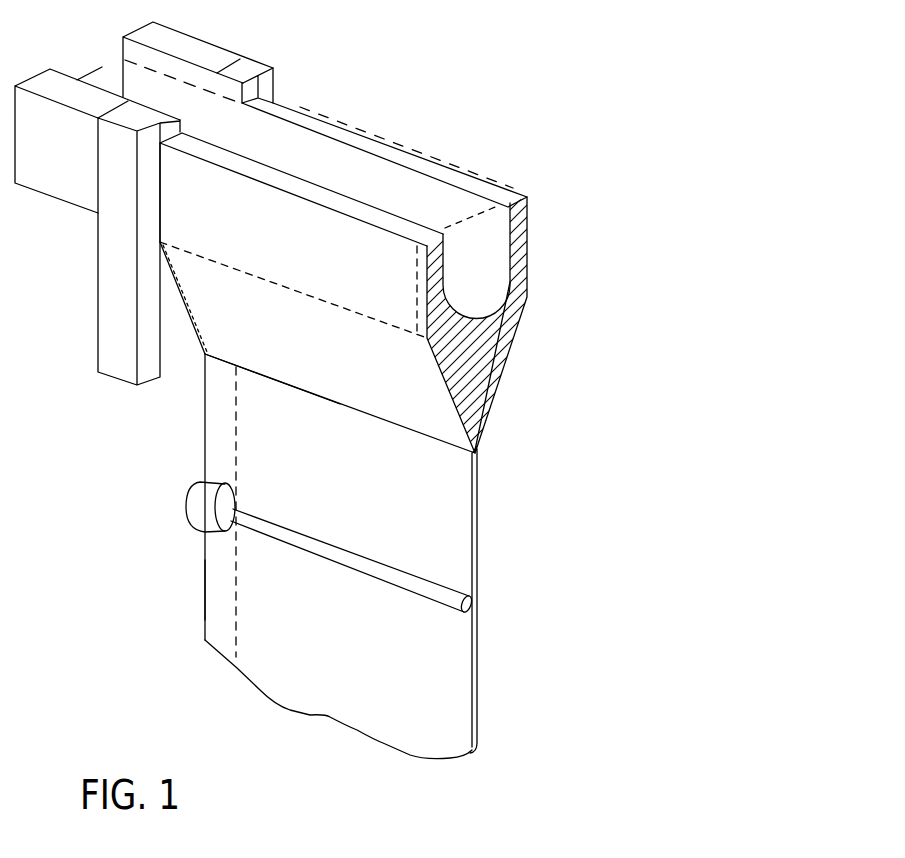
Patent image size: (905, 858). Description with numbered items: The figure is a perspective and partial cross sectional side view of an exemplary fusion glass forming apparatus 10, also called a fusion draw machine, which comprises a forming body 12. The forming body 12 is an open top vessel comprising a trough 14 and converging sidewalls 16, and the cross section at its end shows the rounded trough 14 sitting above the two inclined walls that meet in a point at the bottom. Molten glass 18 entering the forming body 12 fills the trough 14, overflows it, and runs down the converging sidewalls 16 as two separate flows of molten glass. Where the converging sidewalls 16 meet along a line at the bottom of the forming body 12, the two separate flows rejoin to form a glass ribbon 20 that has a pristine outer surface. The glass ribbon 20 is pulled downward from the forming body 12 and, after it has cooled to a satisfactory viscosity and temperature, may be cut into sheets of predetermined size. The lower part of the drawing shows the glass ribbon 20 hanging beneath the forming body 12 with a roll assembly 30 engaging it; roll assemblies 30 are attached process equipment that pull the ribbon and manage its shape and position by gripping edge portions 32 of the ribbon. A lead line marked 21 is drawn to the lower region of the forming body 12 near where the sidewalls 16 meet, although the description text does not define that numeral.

The fusion glass forming apparatus 10 is at (557, 155).
The forming body 12 is at (512, 355).
The trough 14 is at (487, 278).
The converging sidewalls 16 is at (352, 371).
The molten glass 18 is at (100, 66).
The glass ribbon 20 is at (486, 538).
The lower edge 21 is at (325, 400).
The roll assembly 30 is at (170, 490).
The edge portions 32 is at (215, 600).